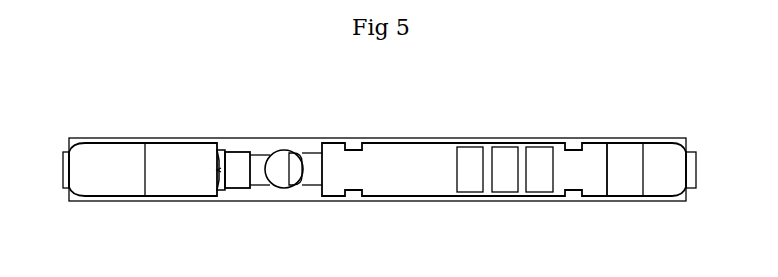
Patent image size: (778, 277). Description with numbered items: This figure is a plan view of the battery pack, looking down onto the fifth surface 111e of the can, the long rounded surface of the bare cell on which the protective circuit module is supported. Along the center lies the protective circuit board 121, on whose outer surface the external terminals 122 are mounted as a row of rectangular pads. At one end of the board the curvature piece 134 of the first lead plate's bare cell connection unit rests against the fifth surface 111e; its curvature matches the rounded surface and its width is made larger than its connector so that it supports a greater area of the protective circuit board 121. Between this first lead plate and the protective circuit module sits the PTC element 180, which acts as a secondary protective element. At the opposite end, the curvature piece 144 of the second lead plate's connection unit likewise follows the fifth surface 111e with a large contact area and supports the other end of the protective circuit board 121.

The fifth surface 111e is at (271, 201).
The curvature piece 134 is at (186, 157).
The PTC element 180 is at (289, 150).
The protective circuit board 121 is at (389, 157).
The external terminals 122 is at (505, 153).
The curvature piece 144 is at (660, 148).